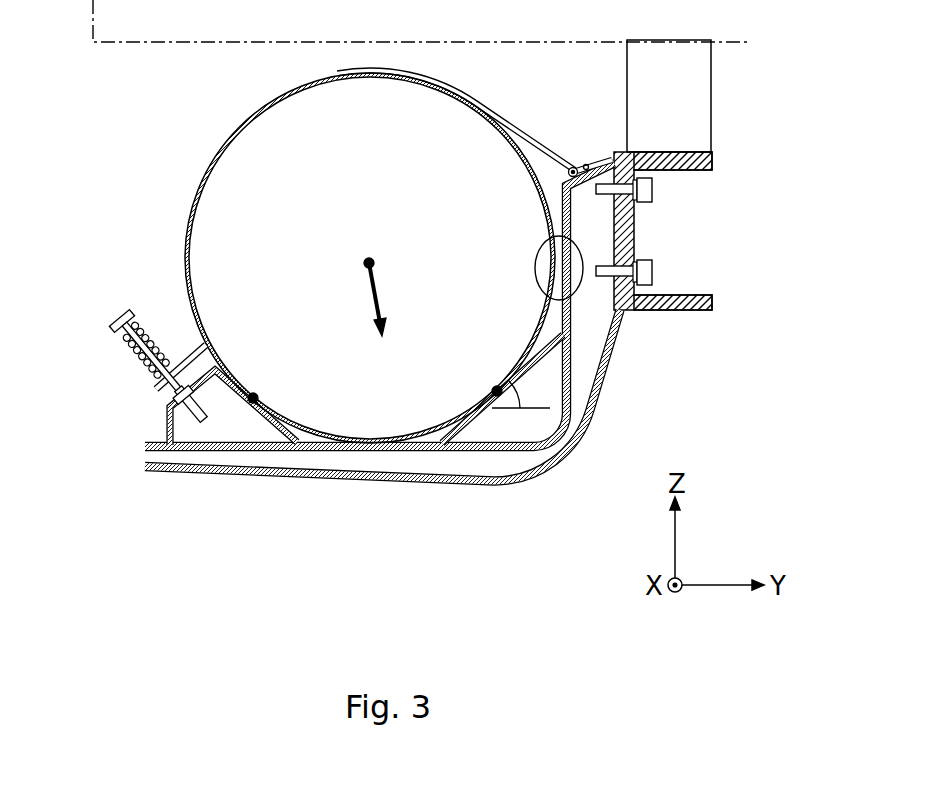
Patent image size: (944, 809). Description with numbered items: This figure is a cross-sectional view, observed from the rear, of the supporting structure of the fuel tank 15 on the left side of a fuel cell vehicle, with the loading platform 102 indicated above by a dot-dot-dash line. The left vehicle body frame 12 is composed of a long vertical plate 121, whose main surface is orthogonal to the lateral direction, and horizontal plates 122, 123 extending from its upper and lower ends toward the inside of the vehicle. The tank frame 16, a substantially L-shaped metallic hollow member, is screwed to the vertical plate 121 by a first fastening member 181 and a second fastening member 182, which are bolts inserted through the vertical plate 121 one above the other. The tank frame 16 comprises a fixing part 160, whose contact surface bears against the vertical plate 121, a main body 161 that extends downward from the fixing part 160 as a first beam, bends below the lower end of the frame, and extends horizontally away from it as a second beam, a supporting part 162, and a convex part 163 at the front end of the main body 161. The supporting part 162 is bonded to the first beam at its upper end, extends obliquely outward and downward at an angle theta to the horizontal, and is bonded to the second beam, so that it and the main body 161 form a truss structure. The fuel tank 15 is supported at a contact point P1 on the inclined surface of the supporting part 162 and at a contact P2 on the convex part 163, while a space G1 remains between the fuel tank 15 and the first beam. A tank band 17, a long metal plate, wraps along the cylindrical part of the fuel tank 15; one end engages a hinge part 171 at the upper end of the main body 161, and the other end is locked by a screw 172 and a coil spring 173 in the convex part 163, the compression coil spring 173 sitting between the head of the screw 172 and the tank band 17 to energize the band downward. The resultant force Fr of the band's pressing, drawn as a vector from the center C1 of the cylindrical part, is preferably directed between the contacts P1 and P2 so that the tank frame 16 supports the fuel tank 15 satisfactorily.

The left vehicle body frame 12 is at (700, 175).
The fuel tank 15 is at (245, 232).
The tank frame 16 is at (391, 356).
The tank band 17 is at (518, 134).
The loading platform 102 is at (100, 44).
The vertical plate 121 is at (635, 232).
The horizontal plate 122 is at (712, 160).
The horizontal plate 123 is at (712, 300).
The fixing part 160 is at (622, 322).
The main body 161 is at (588, 430).
The supporting part 162 is at (473, 418).
The convex part 163 is at (167, 424).
The hinge part 171 is at (575, 167).
The screw 172 is at (110, 322).
The coil spring 173 is at (124, 348).
The first fastening member 181 is at (652, 190).
The second fastening member 182 is at (652, 280).
The center C1 is at (370, 262).
The contact point P1 is at (478, 378).
The contact P2 is at (272, 380).
The space G1 is at (579, 300).
The resultant force Fr is at (381, 317).